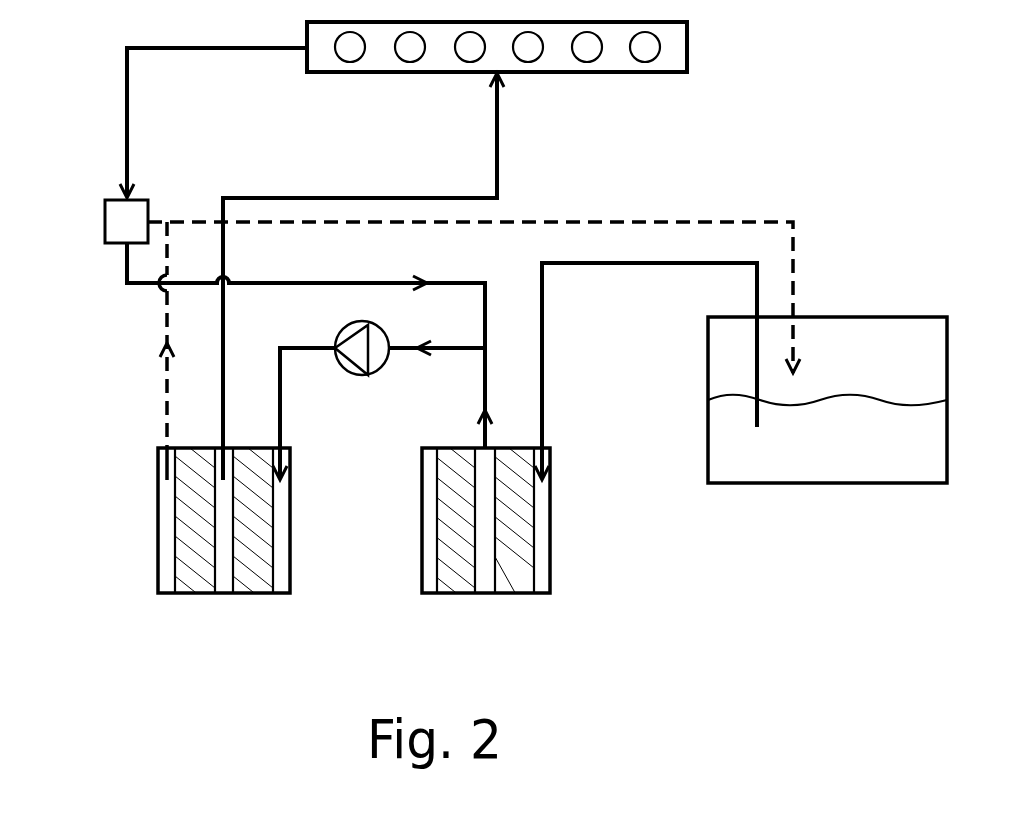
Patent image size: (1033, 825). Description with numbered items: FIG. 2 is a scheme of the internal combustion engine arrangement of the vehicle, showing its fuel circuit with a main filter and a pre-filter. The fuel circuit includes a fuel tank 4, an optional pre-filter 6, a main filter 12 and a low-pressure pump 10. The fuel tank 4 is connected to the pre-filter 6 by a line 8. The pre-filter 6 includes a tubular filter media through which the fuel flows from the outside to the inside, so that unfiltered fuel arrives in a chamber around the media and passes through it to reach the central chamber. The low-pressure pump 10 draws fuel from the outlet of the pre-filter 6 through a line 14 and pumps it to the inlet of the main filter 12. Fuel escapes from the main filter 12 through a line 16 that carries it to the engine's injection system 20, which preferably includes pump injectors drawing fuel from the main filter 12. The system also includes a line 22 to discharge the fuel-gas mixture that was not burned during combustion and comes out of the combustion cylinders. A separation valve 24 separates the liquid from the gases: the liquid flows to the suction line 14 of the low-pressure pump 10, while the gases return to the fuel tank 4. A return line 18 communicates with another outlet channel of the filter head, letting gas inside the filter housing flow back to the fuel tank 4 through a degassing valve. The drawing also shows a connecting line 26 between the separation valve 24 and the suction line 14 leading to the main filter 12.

The fuel tank 4 is at (868, 350).
The pre-filter 6 is at (578, 537).
The line 8 is at (600, 265).
The low-pressure pump 10 is at (352, 378).
The main filter 12 is at (302, 530).
The line 14 is at (452, 352).
The line 16 is at (226, 400).
The return line 18 is at (165, 401).
The injection system 20 is at (665, 62).
The line 22 is at (125, 121).
The separation valve 24 is at (112, 216).
The connecting line 26 is at (368, 283).